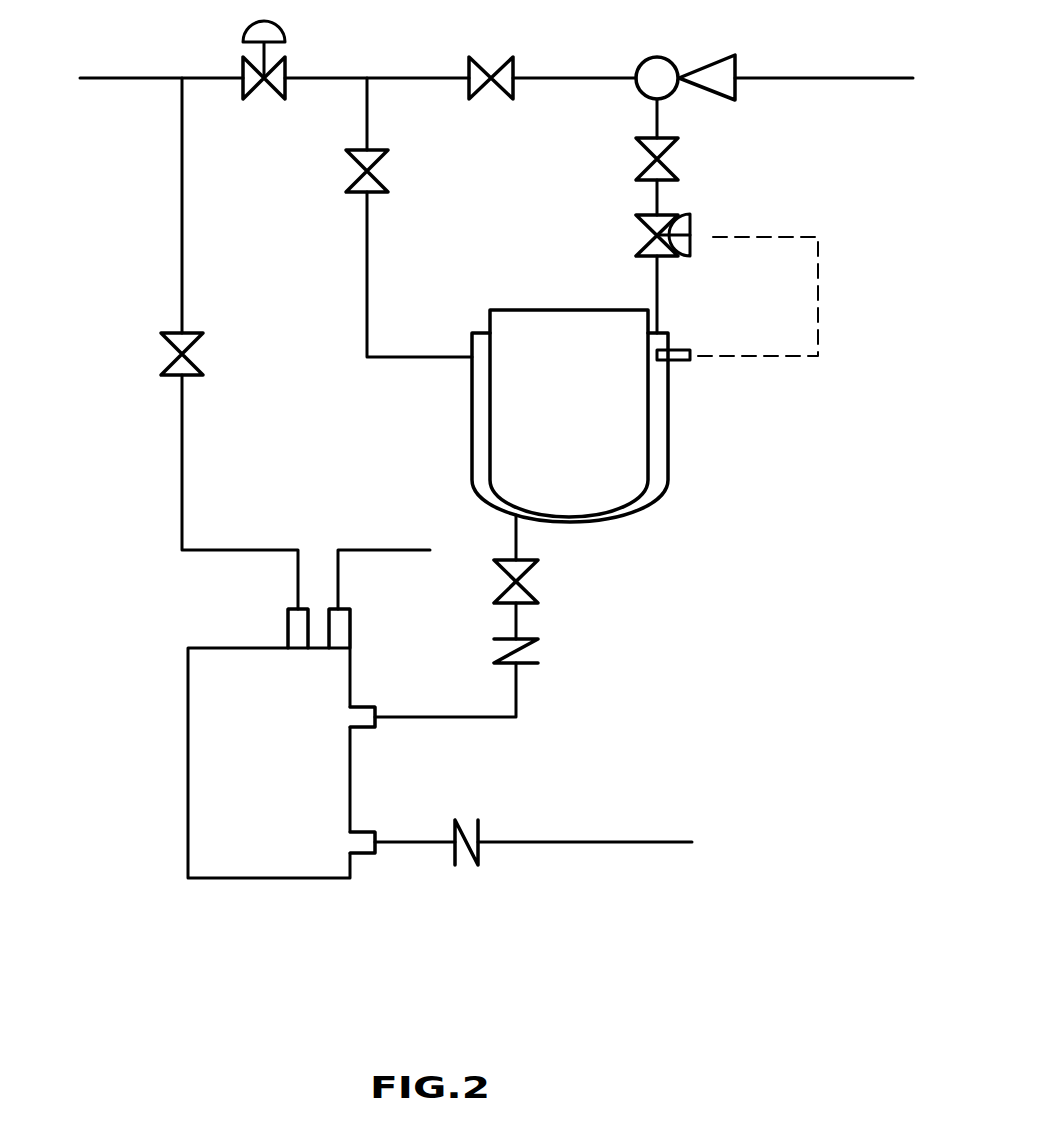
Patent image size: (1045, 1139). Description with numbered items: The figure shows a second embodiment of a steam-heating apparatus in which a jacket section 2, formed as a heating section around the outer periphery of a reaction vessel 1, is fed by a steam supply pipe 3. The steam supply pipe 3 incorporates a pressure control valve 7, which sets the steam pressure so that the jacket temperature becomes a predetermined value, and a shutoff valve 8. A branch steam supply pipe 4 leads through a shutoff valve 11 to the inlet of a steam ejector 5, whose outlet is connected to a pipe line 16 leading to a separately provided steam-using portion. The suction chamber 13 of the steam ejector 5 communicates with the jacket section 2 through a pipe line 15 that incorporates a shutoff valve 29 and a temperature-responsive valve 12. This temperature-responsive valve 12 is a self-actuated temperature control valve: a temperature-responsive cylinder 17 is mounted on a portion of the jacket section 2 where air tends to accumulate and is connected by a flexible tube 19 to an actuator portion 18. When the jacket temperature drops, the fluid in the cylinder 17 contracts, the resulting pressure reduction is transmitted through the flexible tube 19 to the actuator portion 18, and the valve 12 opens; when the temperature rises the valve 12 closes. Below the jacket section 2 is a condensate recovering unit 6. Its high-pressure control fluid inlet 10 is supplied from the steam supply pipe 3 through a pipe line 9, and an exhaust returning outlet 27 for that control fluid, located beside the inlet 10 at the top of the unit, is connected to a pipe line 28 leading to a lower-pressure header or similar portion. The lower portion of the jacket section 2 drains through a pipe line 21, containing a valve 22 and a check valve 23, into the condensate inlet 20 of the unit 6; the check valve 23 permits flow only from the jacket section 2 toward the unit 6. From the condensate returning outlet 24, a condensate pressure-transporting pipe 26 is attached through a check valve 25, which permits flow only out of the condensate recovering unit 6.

The reaction vessel 1 is at (510, 322).
The jacket section 2 is at (480, 428).
The steam supply pipe 3 is at (101, 78).
The branch steam supply pipe 4 is at (402, 77).
The steam ejector 5 is at (693, 117).
The condensate recovering unit 6 is at (153, 762).
The pressure control valve 7 is at (240, 70).
The shutoff valve 8 is at (360, 195).
The pipe line 9 is at (180, 440).
The high-pressure control fluid inlet 10 is at (295, 627).
The shutoff valve 11 is at (483, 55).
The temperature-responsive valve 12 is at (645, 228).
The suction chamber 13 is at (645, 53).
The pipe line 15 is at (657, 303).
The pipe line 16 is at (856, 76).
The temperature-responsive cylinder 17 is at (680, 362).
The actuator portion 18 is at (707, 213).
The flexible tube 19 is at (835, 278).
The condensate inlet 20 is at (362, 718).
The pipe line 21 is at (517, 543).
The valve 22 is at (525, 602).
The check valve 23 is at (525, 663).
The condensate returning outlet 24 is at (363, 845).
The check valve 25 is at (482, 853).
The condensate pressure-transporting pipe 26 is at (583, 840).
The exhaust returning outlet 27 is at (343, 627).
The pipe line 28 is at (380, 547).
The shutoff valve 29 is at (645, 152).